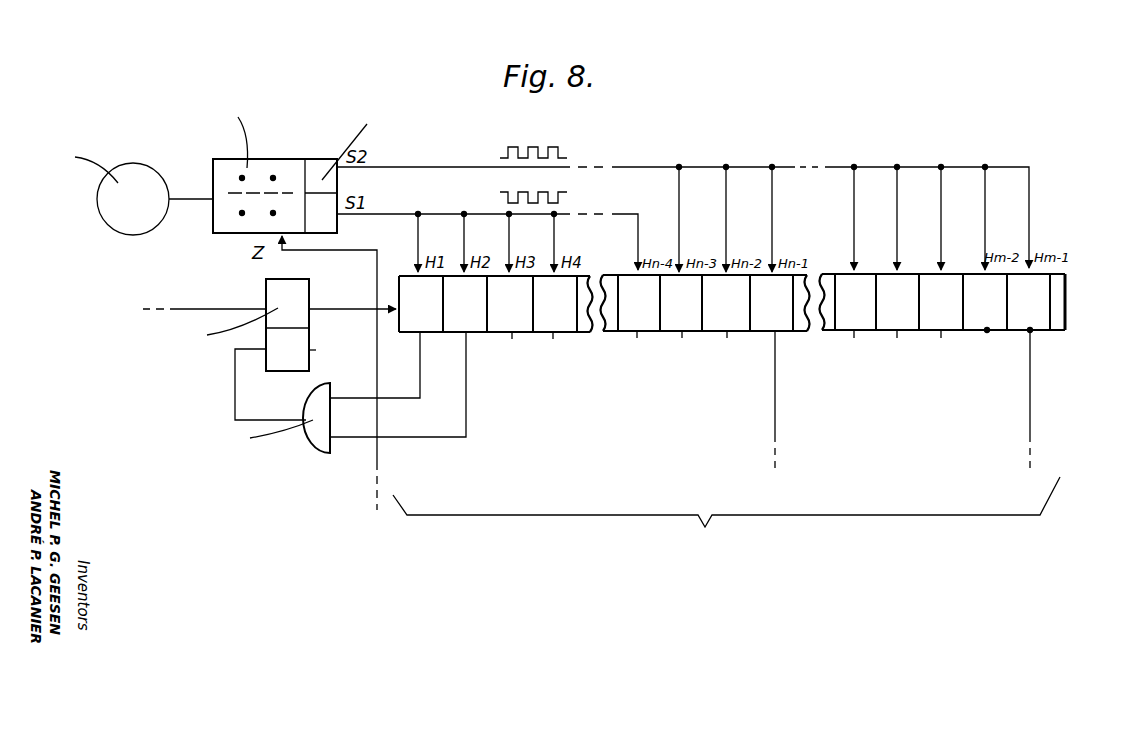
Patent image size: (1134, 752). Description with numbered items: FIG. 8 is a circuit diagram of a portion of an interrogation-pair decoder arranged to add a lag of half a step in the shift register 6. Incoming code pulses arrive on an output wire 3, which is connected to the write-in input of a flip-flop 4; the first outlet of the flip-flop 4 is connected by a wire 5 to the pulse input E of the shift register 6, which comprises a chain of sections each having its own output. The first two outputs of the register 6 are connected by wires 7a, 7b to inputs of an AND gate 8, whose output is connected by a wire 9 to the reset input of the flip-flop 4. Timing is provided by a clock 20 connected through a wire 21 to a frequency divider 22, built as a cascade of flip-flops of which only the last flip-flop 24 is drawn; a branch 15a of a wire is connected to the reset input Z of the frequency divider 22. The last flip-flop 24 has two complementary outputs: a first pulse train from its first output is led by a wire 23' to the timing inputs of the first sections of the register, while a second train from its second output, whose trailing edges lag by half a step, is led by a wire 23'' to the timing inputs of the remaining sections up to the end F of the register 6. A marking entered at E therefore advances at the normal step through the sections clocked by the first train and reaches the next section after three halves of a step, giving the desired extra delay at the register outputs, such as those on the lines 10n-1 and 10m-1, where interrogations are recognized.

The clock 20 is at (130, 173).
The wire 21 is at (200, 187).
The frequency divider 22 is at (291, 153).
The last flip-flop 24 is at (329, 158).
The wire 23' is at (487, 228).
The wire 23'' is at (683, 207).
The output wire 3 is at (187, 308).
The flip-flop 4 is at (290, 363).
The wire 5 is at (345, 311).
The shift register 6 is at (890, 336).
The wire 7a is at (420, 378).
The wire 7b is at (468, 421).
The AND gate 8 is at (304, 440).
The wire 9 is at (235, 403).
The branch of wire 15a is at (377, 468).
The output line Sn-1 10n-1 is at (775, 415).
The output line Sm-1 10m-1 is at (1030, 417).